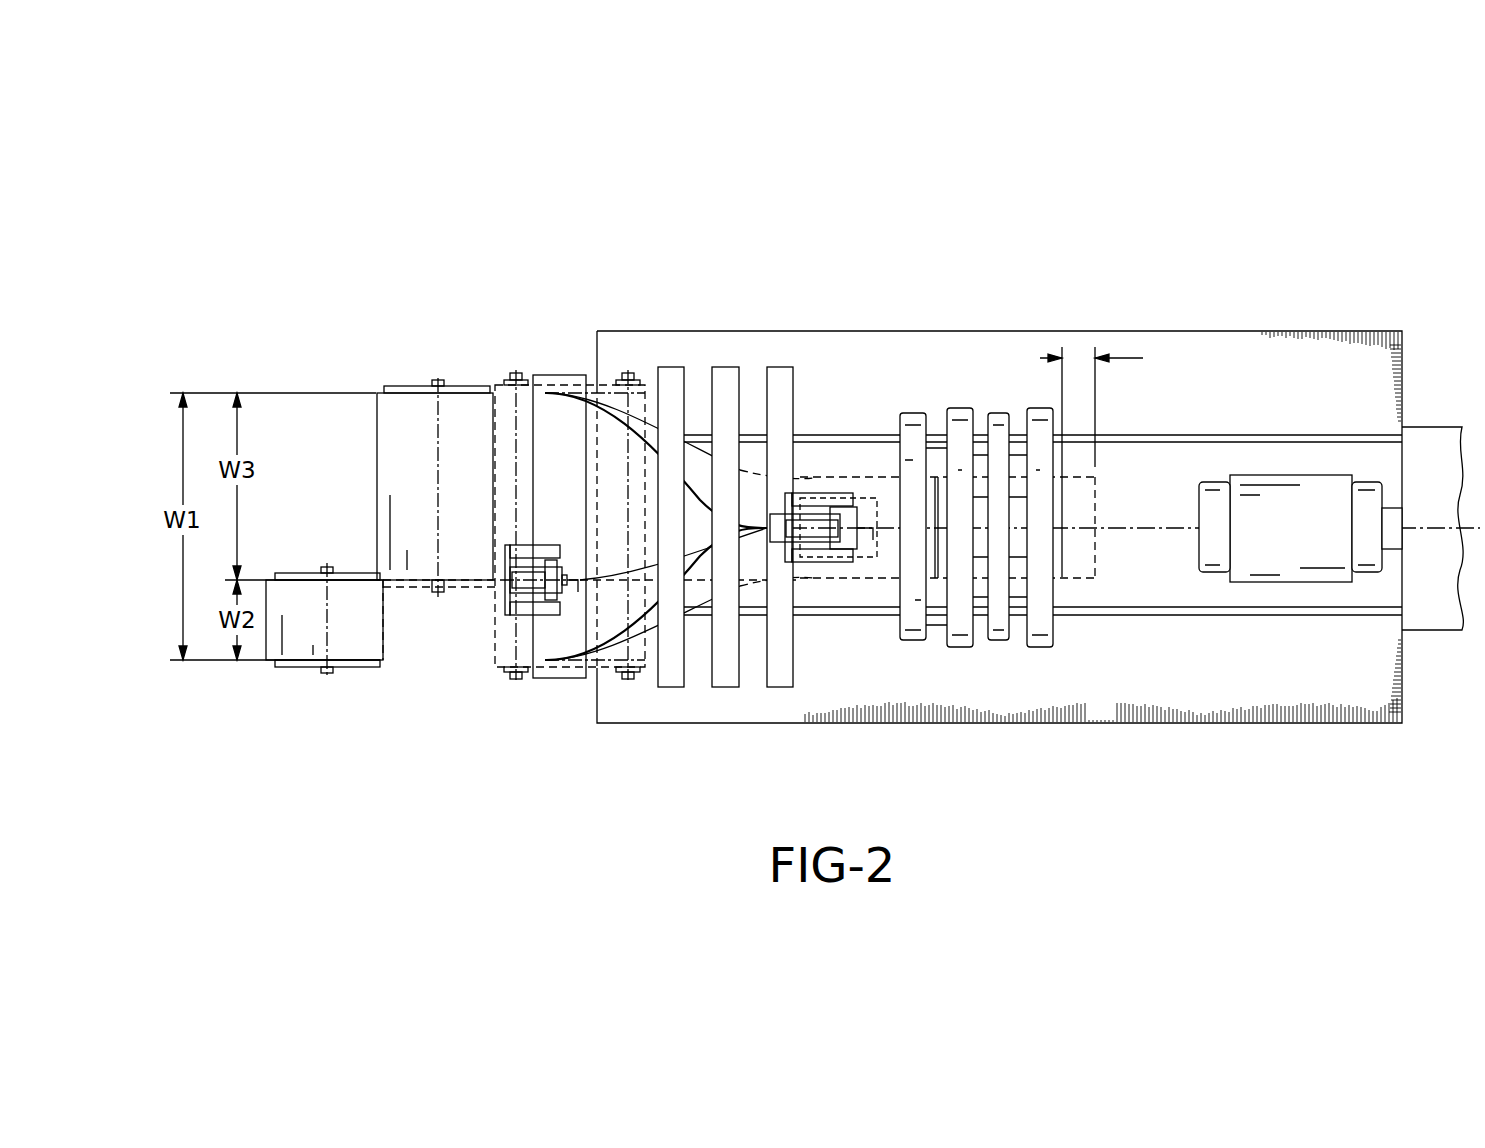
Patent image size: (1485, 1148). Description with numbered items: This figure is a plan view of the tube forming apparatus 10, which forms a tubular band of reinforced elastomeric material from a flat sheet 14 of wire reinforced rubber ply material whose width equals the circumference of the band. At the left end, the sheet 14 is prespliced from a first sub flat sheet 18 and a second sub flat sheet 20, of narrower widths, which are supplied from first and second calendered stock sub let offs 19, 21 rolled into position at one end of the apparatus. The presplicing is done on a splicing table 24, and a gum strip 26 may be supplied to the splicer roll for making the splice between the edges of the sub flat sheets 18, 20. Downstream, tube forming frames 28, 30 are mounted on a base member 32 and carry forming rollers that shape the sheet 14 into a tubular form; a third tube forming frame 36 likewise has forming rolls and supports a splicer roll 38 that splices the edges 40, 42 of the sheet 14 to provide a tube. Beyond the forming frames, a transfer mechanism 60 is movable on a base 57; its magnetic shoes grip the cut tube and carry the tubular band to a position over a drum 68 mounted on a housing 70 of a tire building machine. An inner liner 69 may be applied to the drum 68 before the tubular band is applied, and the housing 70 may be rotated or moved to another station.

The tube forming apparatus 10 is at (943, 287).
The flat sheet 14 is at (610, 468).
The first sub flat sheet 18 is at (300, 616).
The first calendered stock sub let off 19 is at (348, 667).
The second sub flat sheet 20 is at (400, 440).
The second calendered stock sub let off 21 is at (458, 388).
The splicing table 24 is at (525, 388).
The gum strip 26 is at (527, 583).
The tube forming frame 28 is at (670, 676).
The tube forming frame 30 is at (726, 672).
The base member 32 is at (773, 345).
The third tube forming frame 36 is at (780, 676).
The splicer roll 38 is at (847, 520).
The edge 40 is at (625, 628).
The edge 42 is at (608, 400).
The base 57 is at (1017, 463).
The transfer mechanism 60 is at (1042, 627).
The drum 68 is at (1365, 560).
The inner liner 69 is at (1283, 502).
The housing 70 is at (1435, 457).